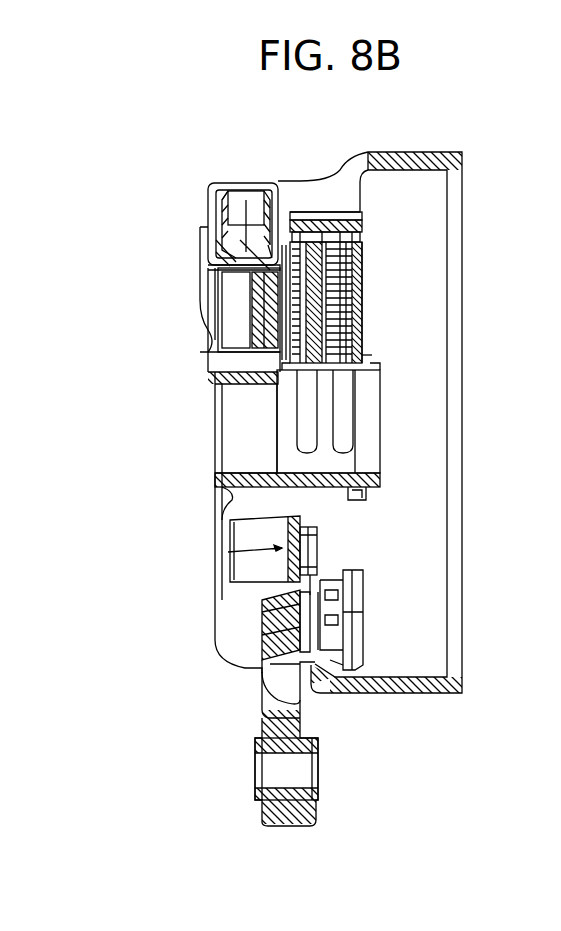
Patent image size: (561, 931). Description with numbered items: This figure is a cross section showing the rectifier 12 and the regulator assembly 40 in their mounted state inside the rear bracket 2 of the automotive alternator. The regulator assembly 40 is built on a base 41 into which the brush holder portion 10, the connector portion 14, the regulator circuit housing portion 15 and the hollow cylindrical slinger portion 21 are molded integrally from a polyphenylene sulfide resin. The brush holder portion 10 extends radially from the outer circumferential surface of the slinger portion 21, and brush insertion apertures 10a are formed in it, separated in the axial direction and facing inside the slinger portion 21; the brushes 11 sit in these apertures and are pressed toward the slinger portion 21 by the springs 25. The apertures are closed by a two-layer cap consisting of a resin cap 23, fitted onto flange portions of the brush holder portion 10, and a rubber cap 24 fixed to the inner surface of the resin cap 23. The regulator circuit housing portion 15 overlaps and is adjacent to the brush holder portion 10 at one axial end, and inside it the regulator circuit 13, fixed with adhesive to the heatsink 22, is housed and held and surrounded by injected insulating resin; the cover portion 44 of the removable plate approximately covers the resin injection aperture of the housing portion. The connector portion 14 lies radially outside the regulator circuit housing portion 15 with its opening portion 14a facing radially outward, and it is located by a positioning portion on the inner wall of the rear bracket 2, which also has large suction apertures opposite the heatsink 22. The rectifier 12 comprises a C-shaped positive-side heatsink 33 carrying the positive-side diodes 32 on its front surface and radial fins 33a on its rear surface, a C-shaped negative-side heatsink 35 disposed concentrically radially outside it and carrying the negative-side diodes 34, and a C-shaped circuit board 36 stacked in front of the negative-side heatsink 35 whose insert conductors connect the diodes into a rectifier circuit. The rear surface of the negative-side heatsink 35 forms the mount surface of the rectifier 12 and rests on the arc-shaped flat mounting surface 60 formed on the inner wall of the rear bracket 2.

The rear bracket 2 is at (466, 152).
The brush holder portion 10 is at (366, 297).
The brush insertion apertures 10a is at (362, 322).
The brushes 11 is at (345, 408).
The rectifier 12 is at (373, 575).
The regulator circuit 13 is at (236, 293).
The connector portion 14 is at (214, 214).
The opening portion 14a is at (240, 200).
The regulator circuit housing portion 15 is at (210, 372).
The slinger portion 21 is at (370, 486).
The heatsink 22 is at (246, 312).
The resin cap 23 is at (350, 228).
The rubber cap 24 is at (357, 240).
The springs 25 is at (356, 268).
The positive-side diodes 32 is at (317, 540).
The positive-side heatsink 33 is at (258, 562).
The fins 33a is at (240, 540).
The negative-side diodes 34 is at (262, 645).
The negative-side heatsink 35 is at (260, 628).
The circuit board 36 is at (363, 612).
The regulator assembly 40 is at (365, 340).
The base 41 is at (372, 355).
The cover portion 44 is at (350, 214).
The mounting surface 60 is at (262, 612).